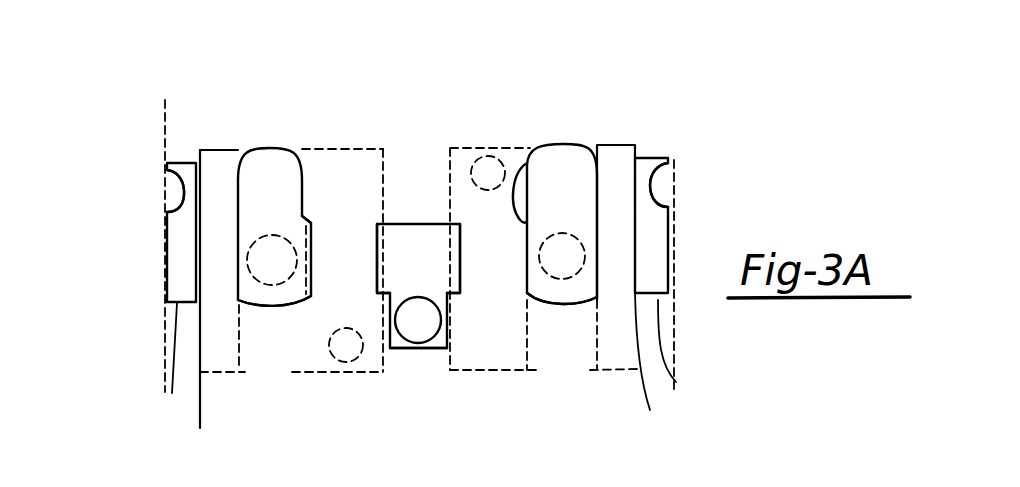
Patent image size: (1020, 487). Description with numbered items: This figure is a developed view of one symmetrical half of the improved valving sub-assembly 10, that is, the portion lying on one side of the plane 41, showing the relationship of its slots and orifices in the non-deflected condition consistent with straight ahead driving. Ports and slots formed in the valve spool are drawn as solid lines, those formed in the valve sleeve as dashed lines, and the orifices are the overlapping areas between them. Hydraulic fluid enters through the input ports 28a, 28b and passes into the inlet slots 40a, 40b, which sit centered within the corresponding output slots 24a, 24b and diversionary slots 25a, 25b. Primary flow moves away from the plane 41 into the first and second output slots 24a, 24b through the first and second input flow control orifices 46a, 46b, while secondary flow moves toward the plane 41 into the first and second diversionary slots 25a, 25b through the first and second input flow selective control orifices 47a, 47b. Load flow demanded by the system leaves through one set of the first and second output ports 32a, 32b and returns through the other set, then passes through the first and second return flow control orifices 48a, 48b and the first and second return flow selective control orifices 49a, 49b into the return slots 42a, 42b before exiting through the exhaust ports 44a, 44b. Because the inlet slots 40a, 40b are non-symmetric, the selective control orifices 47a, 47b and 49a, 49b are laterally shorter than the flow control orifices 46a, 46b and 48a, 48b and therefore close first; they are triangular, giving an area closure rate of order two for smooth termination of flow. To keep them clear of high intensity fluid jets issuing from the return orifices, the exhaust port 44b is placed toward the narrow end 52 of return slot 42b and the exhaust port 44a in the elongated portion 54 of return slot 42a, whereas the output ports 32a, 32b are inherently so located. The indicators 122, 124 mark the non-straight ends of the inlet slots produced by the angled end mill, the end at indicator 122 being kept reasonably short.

The improved valving sub-assembly 10 is at (733, 133).
The plane 41 is at (166, 346).
The first return slot 42a is at (418, 222).
The second return slot 42b is at (437, 363).
The exhaust port 44a is at (428, 350).
The exhaust port 44b is at (182, 163).
The first input flow control orifice 46a is at (308, 219).
The second input flow control orifice 46b is at (524, 160).
The first input flow selective control orifice 47a is at (250, 307).
The second input flow selective control orifice 47b is at (608, 298).
The first return flow control orifice 48a is at (387, 222).
The second return flow control orifice 48b is at (458, 223).
The first return flow selective control orifice 49a is at (198, 303).
The second return flow selective control orifice 49b is at (651, 367).
The narrow end 52 is at (158, 192).
The elongated portion 54 is at (399, 358).
The indicator 122 is at (243, 148).
The indicator 124 is at (272, 308).
The first output slot 24a is at (353, 147).
The second output slot 24b is at (477, 371).
The first diversionary slot 25a is at (227, 147).
The second diversionary slot 25b is at (628, 144).
The input port 28a is at (284, 283).
The input port 28b is at (549, 278).
The first output port 32a is at (347, 363).
The second output port 32b is at (500, 156).
The inlet slot 40a is at (281, 148).
The inlet slot 40b is at (572, 143).